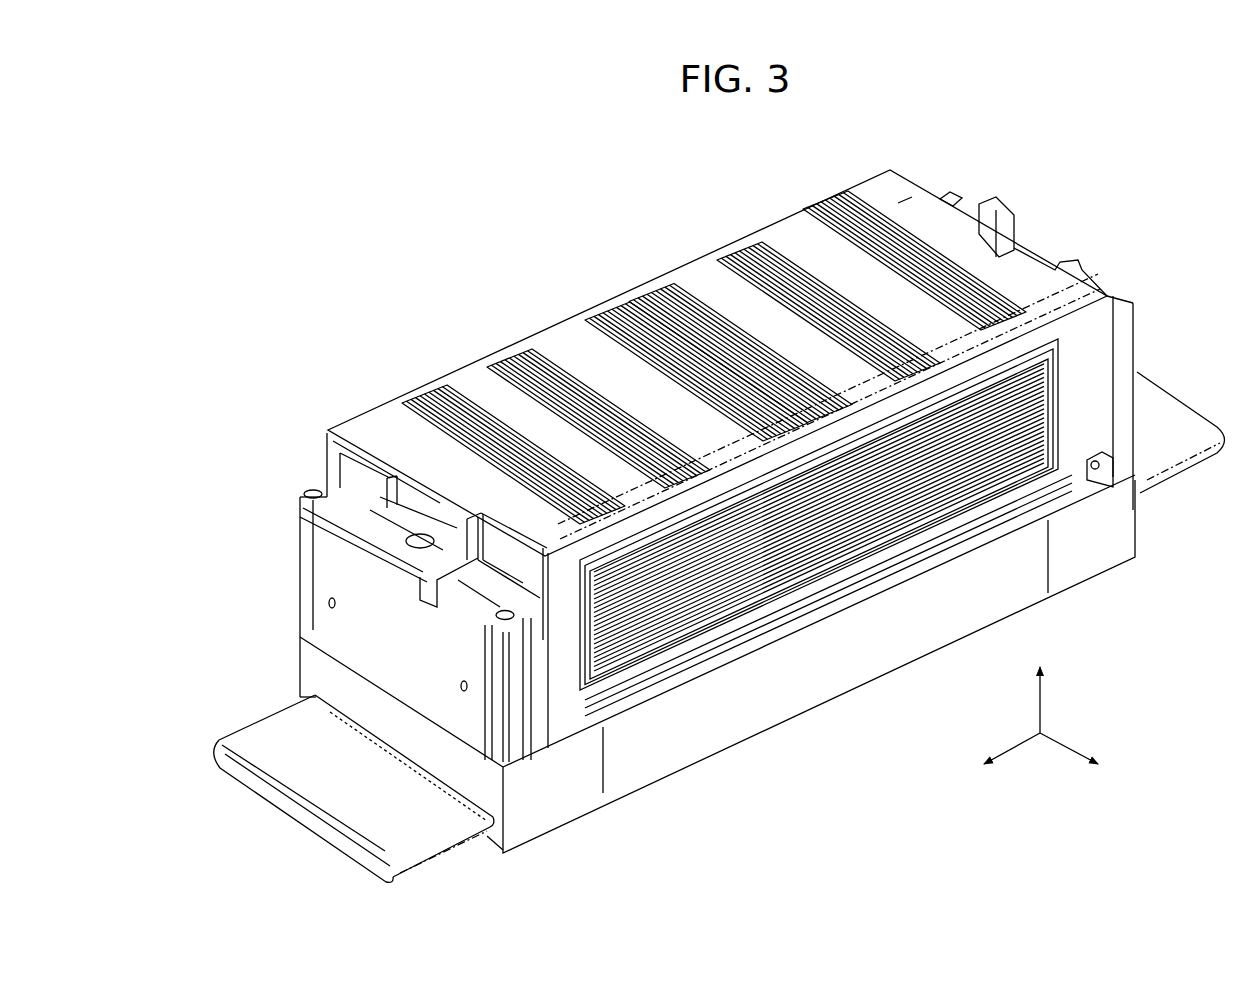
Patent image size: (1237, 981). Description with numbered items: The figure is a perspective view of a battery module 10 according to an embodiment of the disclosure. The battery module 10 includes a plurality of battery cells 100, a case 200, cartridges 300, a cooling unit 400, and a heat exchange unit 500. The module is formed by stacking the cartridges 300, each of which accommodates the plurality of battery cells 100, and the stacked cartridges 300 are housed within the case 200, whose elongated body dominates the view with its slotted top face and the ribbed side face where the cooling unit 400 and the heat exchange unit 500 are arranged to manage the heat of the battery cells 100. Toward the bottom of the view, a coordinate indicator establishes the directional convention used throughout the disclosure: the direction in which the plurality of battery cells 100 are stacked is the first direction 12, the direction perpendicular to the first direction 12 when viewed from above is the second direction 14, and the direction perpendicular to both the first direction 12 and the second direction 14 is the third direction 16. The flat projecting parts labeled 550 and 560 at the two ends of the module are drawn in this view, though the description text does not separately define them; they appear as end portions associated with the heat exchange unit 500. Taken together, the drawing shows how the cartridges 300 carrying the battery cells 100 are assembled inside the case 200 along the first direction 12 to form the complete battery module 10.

The battery module 10 is at (425, 226).
The battery cells 100 is at (1070, 248).
The case 200 is at (1090, 278).
The cartridges 300 is at (1012, 204).
The cooling unit 400 is at (1037, 227).
The heat exchange unit 500 is at (253, 658).
The first handle 550 is at (258, 737).
The second handle 560 is at (1168, 406).
The first direction 12 is at (1088, 760).
The second direction 14 is at (994, 760).
The third direction 16 is at (1041, 682).